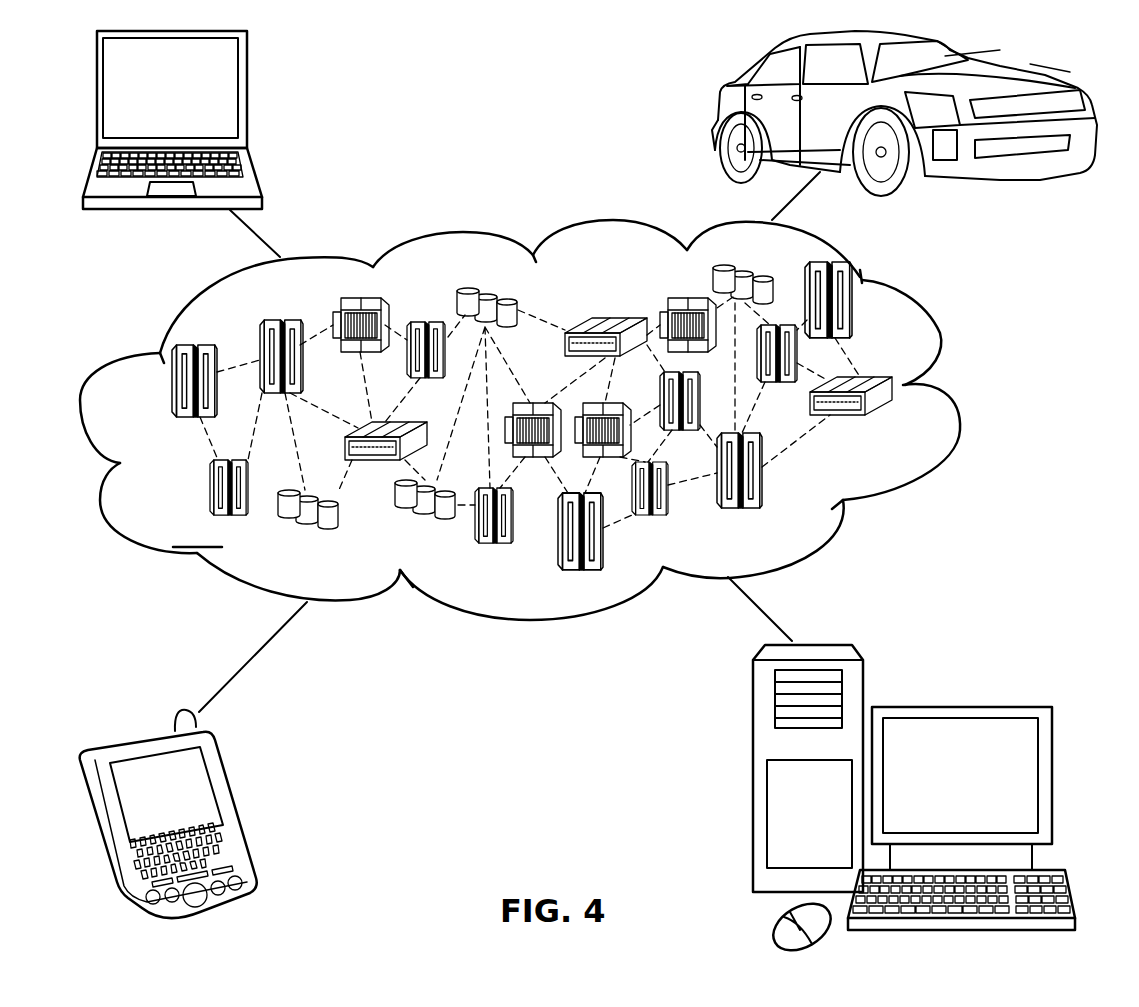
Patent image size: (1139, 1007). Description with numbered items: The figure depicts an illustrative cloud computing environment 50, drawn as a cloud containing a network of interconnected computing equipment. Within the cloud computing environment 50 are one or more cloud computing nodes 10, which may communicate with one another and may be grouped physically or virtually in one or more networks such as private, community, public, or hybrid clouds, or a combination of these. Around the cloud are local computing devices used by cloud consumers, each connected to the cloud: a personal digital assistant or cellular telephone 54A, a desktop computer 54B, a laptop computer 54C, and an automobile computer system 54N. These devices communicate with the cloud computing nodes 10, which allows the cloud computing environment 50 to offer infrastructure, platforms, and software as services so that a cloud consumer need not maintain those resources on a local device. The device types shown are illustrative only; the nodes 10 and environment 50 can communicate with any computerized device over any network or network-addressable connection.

The cloud computing environment 50 is at (955, 398).
The cloud computing node 10 is at (895, 427).
The personal digital assistant or cellular telephone 54A is at (233, 808).
The desktop computer 54B is at (957, 707).
The laptop computer 54C is at (247, 97).
The automobile computer system 54N is at (720, 113).